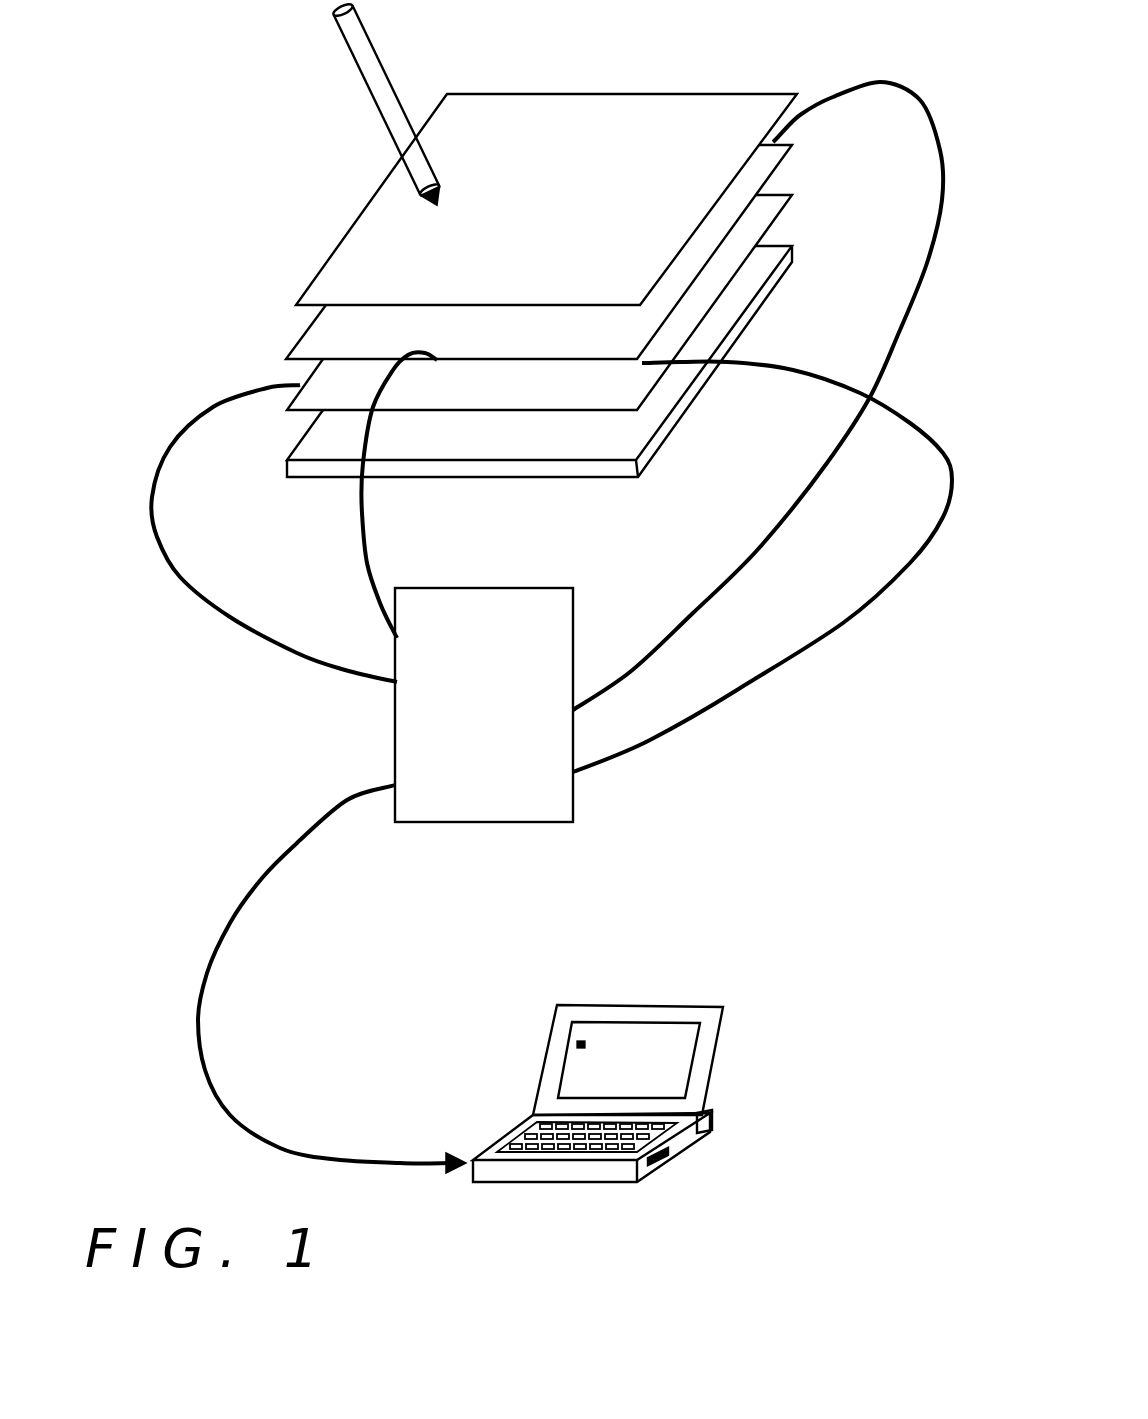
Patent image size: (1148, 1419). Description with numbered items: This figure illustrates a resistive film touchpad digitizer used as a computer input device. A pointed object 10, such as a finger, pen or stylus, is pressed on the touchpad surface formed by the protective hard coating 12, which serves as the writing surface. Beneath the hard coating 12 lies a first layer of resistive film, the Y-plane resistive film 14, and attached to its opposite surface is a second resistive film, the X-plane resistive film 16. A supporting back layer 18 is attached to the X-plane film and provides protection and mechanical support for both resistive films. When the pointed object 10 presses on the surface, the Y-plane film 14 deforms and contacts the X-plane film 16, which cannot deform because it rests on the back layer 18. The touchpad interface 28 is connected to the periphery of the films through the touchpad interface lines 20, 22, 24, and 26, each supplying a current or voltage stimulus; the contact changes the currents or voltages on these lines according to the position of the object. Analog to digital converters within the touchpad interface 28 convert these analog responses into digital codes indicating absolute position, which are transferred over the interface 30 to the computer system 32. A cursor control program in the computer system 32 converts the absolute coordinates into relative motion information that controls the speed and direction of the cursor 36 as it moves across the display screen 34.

The pointed object 10 is at (375, 79).
The protective hard coating 12 is at (373, 210).
The Y-plane resistive film 14 is at (322, 330).
The X-plane resistive film 16 is at (773, 205).
The supporting back layer 18 is at (650, 452).
The touchpad interface line 20 is at (362, 543).
The touchpad interface line 22 is at (940, 127).
The touchpad interface line 24 is at (183, 430).
The touchpad interface line 26 is at (947, 485).
The touchpad interface 28 is at (573, 788).
The interface 30 is at (268, 867).
The computer system 32 is at (483, 1182).
The display screen 34 is at (700, 1045).
The cursor 36 is at (584, 1043).